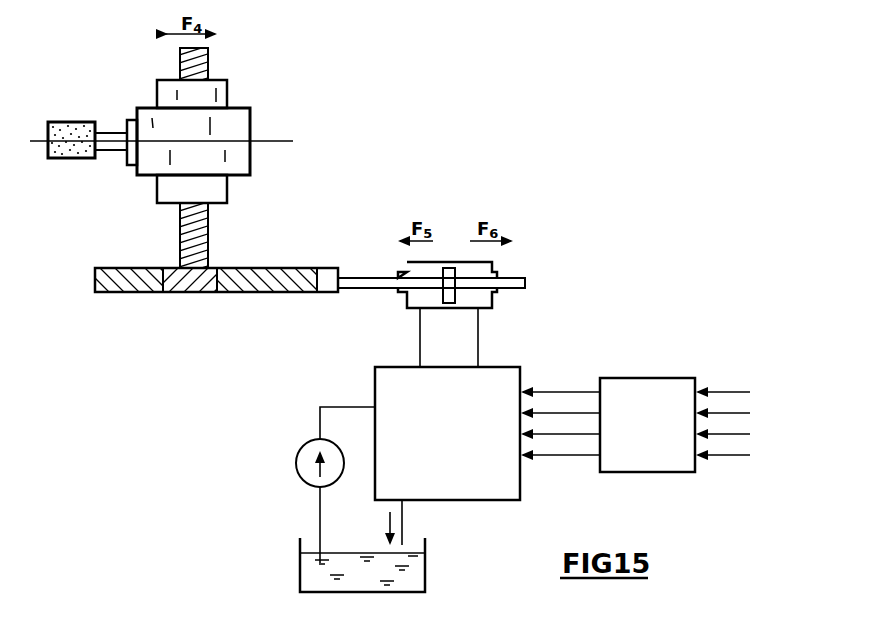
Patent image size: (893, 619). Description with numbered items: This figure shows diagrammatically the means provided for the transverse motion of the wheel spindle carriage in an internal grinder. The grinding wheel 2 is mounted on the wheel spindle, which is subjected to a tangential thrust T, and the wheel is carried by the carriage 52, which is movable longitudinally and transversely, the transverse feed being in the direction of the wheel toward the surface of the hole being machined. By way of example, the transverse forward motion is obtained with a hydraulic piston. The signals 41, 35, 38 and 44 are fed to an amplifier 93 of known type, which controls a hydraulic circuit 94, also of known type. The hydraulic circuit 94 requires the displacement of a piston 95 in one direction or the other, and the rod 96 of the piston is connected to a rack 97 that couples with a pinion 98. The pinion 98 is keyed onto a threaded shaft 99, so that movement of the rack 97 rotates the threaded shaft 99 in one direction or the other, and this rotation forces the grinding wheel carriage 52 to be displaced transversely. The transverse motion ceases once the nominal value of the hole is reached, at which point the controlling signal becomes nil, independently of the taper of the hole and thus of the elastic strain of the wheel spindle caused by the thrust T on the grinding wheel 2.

The grinding wheel 2 is at (63, 127).
The tangential thrust T is at (108, 133).
The carriage 52 is at (217, 100).
The threaded shaft 99 is at (208, 233).
The pinion 98 is at (198, 283).
The rack plate 97 is at (272, 280).
The rod 96 is at (357, 287).
The piston 95 is at (449, 270).
The hydraulic circuit 94 is at (408, 450).
The amplifier 93 is at (609, 425).
The signal 41 is at (737, 391).
The signal 35 is at (737, 413).
The signal 38 is at (737, 435).
The signal 44 is at (737, 458).